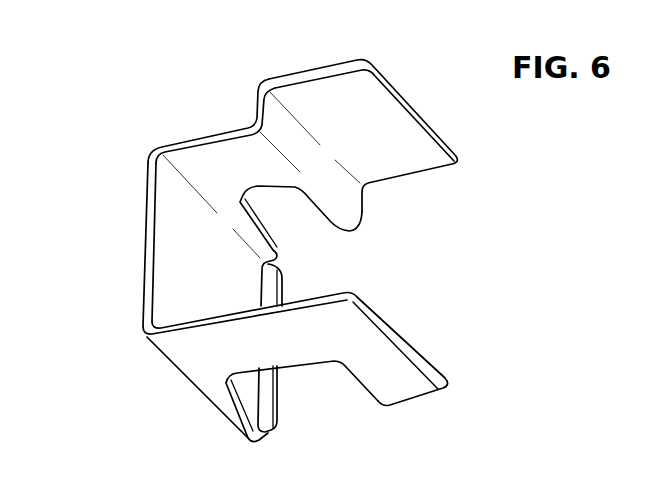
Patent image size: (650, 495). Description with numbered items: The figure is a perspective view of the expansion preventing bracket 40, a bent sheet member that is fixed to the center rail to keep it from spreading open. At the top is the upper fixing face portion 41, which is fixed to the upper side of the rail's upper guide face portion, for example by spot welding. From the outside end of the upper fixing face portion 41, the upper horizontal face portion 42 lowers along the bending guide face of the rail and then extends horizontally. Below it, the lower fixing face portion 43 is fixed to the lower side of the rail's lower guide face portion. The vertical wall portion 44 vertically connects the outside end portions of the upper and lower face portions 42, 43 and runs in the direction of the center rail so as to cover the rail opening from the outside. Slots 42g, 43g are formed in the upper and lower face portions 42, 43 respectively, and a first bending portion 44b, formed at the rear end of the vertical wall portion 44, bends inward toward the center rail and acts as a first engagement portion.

The expansion preventing bracket 40 is at (138, 211).
The upper fixing face portion 41 is at (405, 160).
The upper horizontal face portion 42 is at (217, 130).
The slot 42g is at (303, 203).
The lower fixing face portion 43 is at (413, 350).
The slot 43g is at (357, 388).
The vertical wall portion 44 is at (147, 262).
The first bending portion 44b is at (281, 385).